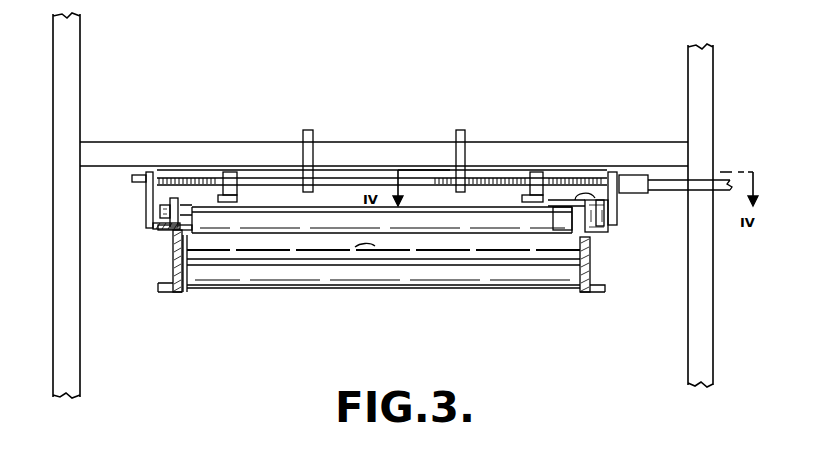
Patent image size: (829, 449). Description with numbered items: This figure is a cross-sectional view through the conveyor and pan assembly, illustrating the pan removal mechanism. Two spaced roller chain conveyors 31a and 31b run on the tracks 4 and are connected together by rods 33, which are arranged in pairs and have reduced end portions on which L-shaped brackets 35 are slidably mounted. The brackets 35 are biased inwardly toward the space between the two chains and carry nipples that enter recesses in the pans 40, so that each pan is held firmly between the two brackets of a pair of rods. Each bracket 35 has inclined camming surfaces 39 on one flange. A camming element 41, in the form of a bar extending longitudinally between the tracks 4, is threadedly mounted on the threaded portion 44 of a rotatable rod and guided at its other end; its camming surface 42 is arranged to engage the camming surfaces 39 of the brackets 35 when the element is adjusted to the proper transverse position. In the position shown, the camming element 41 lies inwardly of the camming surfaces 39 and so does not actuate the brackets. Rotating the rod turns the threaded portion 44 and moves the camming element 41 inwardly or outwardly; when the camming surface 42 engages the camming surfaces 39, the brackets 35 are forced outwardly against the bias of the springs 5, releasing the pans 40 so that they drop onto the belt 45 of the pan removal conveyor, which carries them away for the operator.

The tracks 4 is at (170, 232).
The springs 5 is at (180, 200).
The roller chain conveyor 31a is at (597, 202).
The roller chain conveyor 31b is at (163, 207).
The rods 33 is at (305, 209).
The brackets 35 is at (572, 200).
The camming surfaces 39 is at (557, 205).
The pans 40 is at (460, 226).
The camming element 41 is at (233, 175).
The camming surface 42 is at (550, 226).
The threaded portion 44 is at (176, 176).
The belt 45 is at (345, 298).